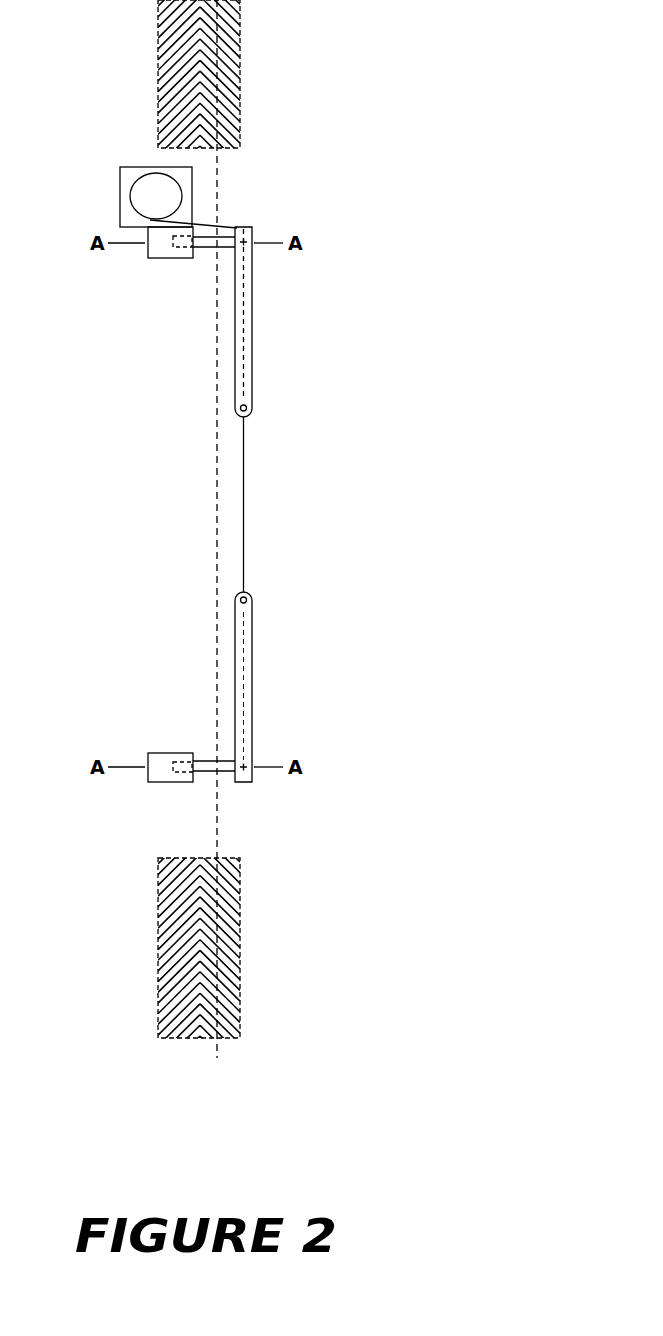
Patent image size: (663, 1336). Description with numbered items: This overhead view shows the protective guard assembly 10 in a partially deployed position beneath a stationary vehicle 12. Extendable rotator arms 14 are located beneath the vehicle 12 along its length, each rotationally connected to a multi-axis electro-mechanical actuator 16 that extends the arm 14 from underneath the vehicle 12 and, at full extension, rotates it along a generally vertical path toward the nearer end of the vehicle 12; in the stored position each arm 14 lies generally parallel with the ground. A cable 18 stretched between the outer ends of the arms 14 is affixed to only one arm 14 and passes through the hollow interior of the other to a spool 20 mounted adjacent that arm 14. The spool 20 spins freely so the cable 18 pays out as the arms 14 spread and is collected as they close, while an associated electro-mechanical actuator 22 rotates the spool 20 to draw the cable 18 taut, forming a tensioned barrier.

The protective guard assembly 10 is at (405, 433).
The vehicle 12 is at (115, 500).
The rotator arm 14 is at (252, 361).
The multi-axis electro-mechanical actuator 16 is at (168, 259).
The cable 18 is at (244, 501).
The spool 20 is at (168, 206).
The electro-mechanical actuator 22 is at (120, 195).